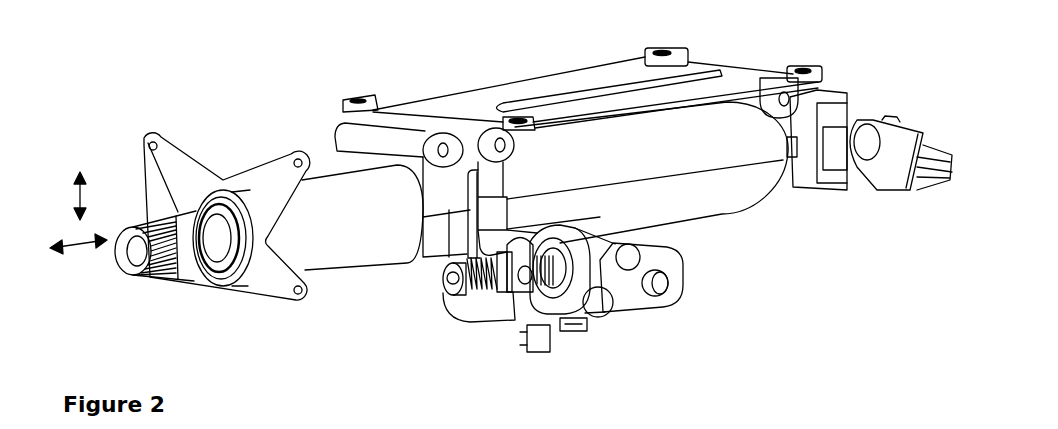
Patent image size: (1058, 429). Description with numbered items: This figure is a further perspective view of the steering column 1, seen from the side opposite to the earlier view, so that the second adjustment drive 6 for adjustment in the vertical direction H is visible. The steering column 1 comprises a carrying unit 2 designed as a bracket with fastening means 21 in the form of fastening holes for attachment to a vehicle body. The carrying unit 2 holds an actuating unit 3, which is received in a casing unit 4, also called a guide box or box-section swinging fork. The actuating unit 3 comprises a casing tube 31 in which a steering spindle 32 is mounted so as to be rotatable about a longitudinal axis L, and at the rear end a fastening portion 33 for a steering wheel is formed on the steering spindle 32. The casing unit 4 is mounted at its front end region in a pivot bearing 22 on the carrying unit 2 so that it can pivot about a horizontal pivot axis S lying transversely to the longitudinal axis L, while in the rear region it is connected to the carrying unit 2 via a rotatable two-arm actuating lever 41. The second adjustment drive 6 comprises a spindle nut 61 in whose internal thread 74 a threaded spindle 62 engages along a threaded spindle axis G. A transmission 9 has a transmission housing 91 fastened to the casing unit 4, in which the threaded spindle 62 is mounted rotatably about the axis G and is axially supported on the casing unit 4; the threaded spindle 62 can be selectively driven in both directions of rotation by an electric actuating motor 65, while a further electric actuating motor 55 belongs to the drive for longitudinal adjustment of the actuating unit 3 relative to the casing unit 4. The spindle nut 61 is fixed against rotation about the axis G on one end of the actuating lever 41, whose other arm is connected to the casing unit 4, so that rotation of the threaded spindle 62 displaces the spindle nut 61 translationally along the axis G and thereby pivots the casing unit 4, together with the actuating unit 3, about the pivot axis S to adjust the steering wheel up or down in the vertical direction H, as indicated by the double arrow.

The steering column 1 is at (523, 58).
The carrying unit 2 is at (517, 97).
The fastening means 21 is at (663, 48).
The pivot bearing 22 is at (783, 94).
The actuating unit 3 is at (325, 285).
The casing tube 31 is at (343, 247).
The steering spindle 32 is at (195, 250).
The fastening portion 33 is at (147, 223).
The casing unit 4 is at (682, 147).
The actuating lever 41 is at (488, 182).
The electric actuating motor 55 is at (663, 260).
The second adjustment drive 6 is at (612, 337).
The spindle nut 61 is at (500, 292).
The threaded spindle 62 is at (477, 290).
The electric actuating motor 65 is at (465, 303).
The internal thread 74 is at (490, 296).
The transmission 9 is at (615, 325).
The transmission housing 91 is at (587, 265).
The pivot axis S is at (883, 113).
The vertical direction H is at (76, 198).
The longitudinal axis L is at (110, 254).
The threaded spindle axis G is at (440, 282).